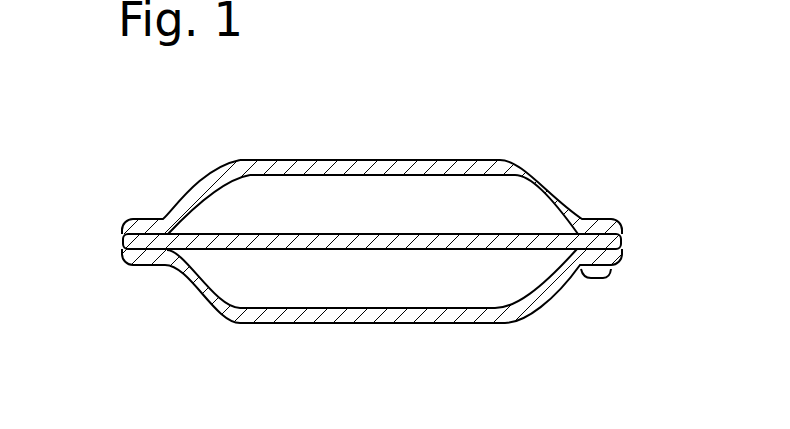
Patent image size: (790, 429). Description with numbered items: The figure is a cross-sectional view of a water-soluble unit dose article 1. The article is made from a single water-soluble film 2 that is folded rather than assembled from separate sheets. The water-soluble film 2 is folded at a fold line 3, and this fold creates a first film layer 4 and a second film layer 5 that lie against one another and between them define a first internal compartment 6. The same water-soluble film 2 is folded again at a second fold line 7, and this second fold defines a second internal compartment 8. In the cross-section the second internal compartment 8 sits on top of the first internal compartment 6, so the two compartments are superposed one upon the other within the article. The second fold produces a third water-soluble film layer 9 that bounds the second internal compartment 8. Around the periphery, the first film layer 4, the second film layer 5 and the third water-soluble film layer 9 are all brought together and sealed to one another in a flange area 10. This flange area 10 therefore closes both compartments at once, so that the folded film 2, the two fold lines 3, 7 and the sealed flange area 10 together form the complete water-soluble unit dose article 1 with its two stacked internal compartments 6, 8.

The water-soluble unit dose article 1 is at (660, 107).
The water-soluble film 2 is at (128, 258).
The fold line 3 is at (613, 245).
The first film layer 4 is at (535, 303).
The second film layer 5 is at (477, 252).
The first internal compartment 6 is at (270, 283).
The second fold line 7 is at (128, 233).
The second internal compartment 8 is at (321, 193).
The third water-soluble film layer 9 is at (530, 173).
The flange area 10 is at (595, 278).